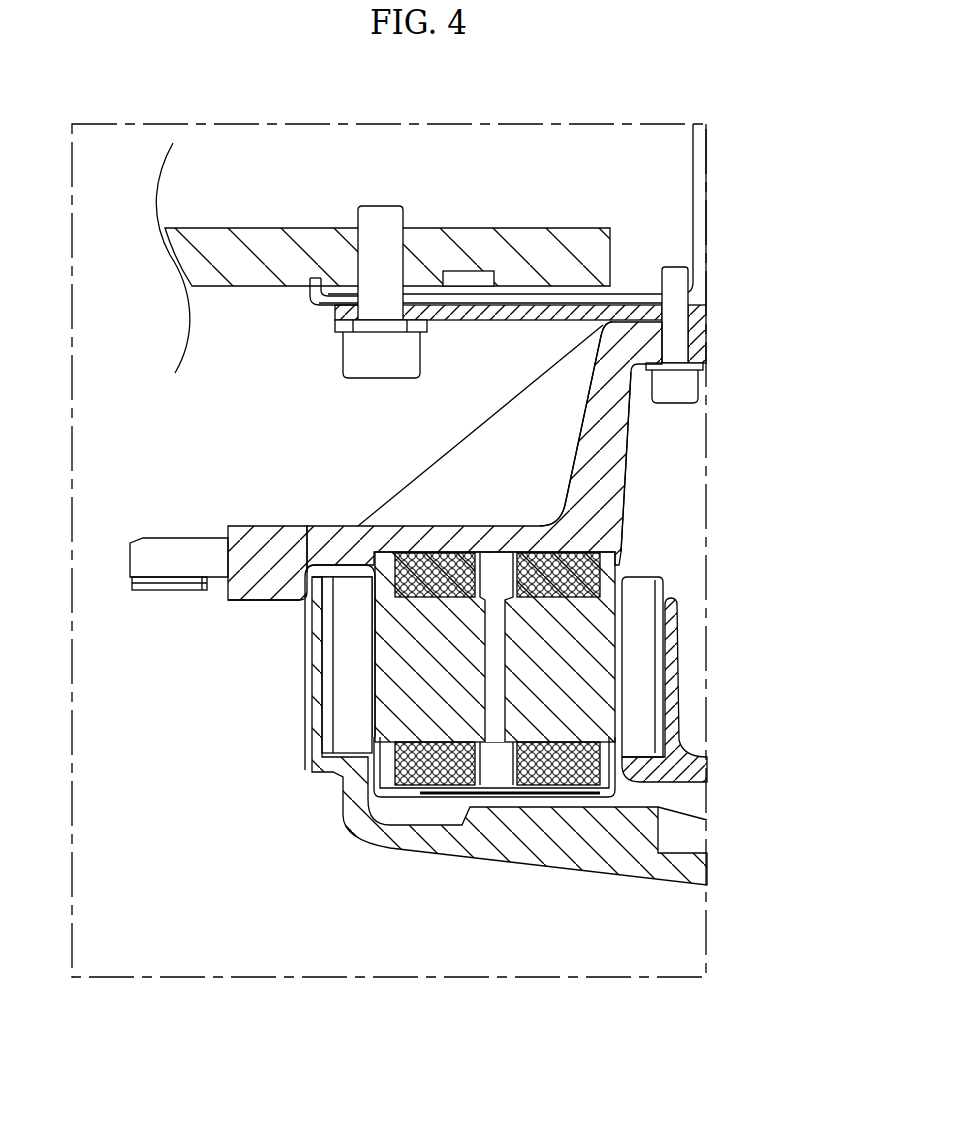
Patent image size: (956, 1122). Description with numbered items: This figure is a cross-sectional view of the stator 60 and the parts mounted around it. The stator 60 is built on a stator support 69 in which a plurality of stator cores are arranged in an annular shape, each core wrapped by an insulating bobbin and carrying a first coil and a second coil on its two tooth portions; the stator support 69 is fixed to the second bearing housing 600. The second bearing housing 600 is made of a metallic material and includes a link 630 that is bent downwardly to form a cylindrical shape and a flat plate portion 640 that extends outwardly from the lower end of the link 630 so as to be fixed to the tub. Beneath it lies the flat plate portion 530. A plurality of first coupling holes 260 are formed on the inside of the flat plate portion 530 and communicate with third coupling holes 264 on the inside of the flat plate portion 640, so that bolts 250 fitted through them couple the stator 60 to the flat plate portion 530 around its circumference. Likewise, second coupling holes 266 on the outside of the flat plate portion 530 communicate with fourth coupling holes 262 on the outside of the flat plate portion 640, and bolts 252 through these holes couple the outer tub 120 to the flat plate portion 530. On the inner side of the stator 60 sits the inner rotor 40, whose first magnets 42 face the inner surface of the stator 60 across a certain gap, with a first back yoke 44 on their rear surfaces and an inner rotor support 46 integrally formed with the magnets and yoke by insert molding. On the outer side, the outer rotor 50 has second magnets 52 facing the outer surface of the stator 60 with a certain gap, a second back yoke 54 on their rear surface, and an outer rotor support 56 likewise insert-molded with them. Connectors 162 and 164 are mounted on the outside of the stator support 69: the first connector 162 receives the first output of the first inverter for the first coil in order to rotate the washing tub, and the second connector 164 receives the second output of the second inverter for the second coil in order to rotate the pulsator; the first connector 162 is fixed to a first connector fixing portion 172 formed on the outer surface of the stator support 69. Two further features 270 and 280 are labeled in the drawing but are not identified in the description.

The inner rotor 40 is at (708, 681).
The first magnets 42 is at (643, 622).
The first back yoke 44 is at (662, 697).
The inner rotor support 46 is at (682, 718).
The outer rotor 50 is at (449, 725).
The second magnets 52 is at (350, 676).
The second back yoke 54 is at (325, 714).
The outer rotor support 56 is at (365, 815).
The stator 60 is at (490, 678).
The stator support 69 is at (467, 447).
The outer tub 120 is at (265, 240).
The first connector 162 is at (166, 517).
The second connector 164 is at (169, 583).
The first connector fixing portion 172 is at (248, 535).
The bolts 250 is at (690, 386).
The bolts 252 is at (360, 358).
The first coupling holes 260 is at (662, 313).
The fourth coupling holes 262 is at (364, 296).
The third coupling holes 264 is at (668, 290).
The second coupling holes 266 is at (355, 322).
The coil 270 is at (420, 565).
The mounting bracket 280 is at (637, 343).
The flat plate portion 530 is at (457, 312).
The second bearing housing 600 is at (554, 214).
The link 630 is at (700, 215).
The flat plate portion 640 is at (535, 300).